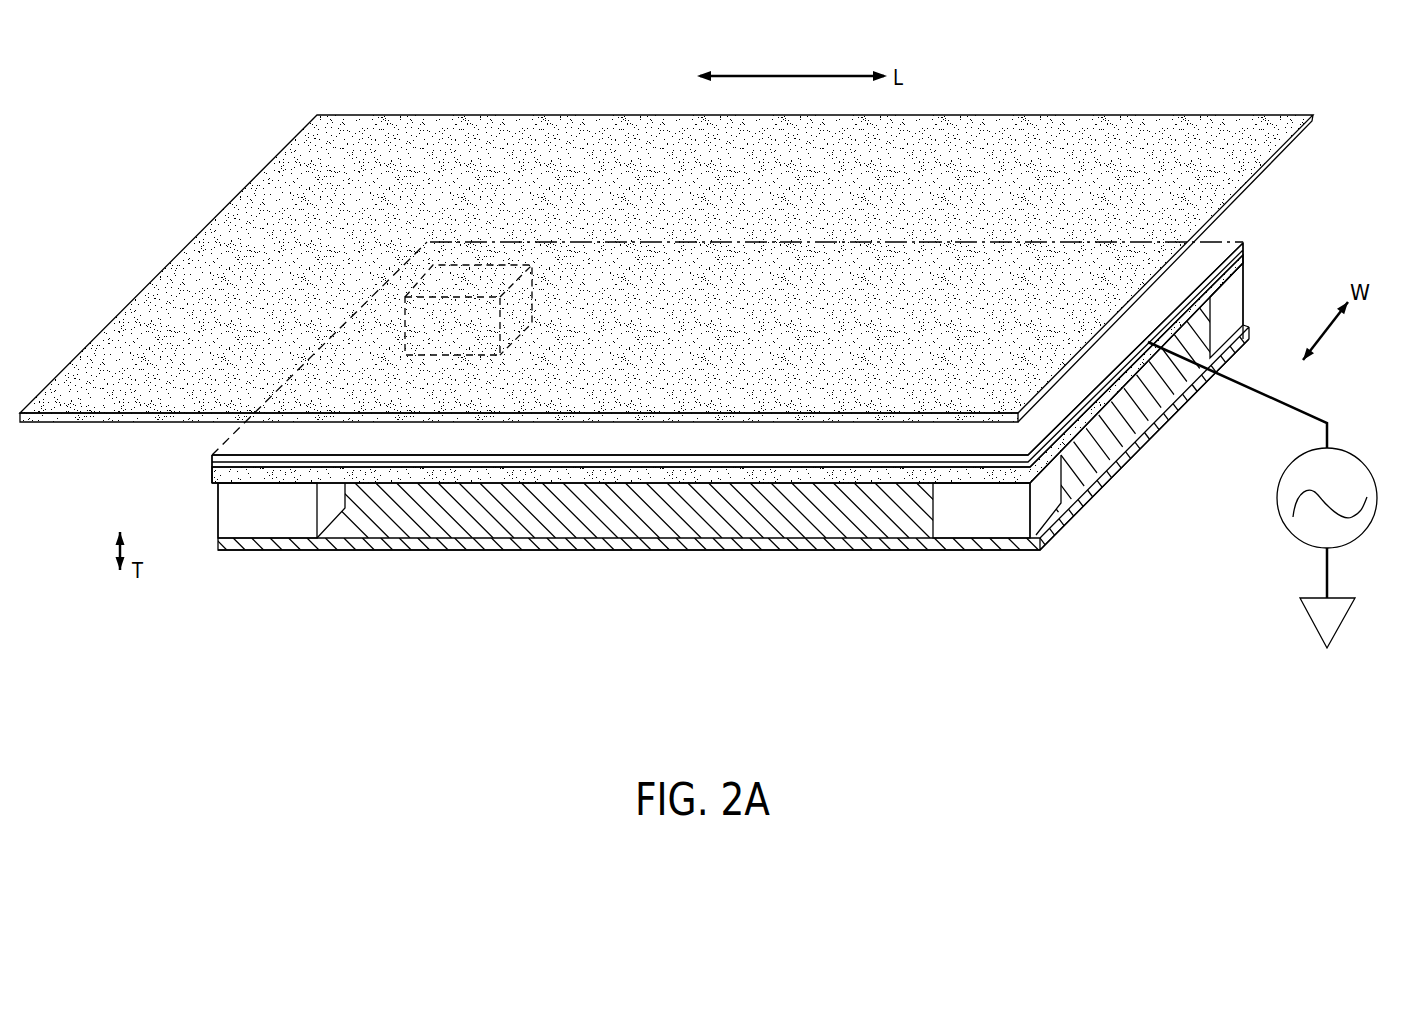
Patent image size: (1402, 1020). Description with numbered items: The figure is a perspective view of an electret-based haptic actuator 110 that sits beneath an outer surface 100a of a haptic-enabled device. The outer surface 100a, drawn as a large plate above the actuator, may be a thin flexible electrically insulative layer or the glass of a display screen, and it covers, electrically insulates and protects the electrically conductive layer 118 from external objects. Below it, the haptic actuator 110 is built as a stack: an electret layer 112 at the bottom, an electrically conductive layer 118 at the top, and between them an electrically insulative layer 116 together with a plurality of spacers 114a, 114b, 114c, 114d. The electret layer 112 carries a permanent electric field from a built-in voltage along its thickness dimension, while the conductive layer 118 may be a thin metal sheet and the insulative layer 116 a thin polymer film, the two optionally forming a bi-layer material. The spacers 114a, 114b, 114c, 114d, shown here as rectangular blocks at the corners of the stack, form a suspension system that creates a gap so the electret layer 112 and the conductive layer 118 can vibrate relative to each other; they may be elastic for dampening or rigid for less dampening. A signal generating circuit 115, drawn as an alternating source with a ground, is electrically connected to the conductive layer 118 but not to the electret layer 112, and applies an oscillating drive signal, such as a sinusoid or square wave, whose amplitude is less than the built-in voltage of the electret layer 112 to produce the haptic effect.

The outer surface 100a is at (278, 223).
The haptic actuator 110 is at (207, 453).
The electret layer 112 is at (890, 550).
The spacer 114a is at (272, 522).
The spacer 114b is at (1042, 510).
The spacer 114c is at (420, 250).
The spacer 114d is at (1245, 292).
The signal generating circuit 115 is at (1342, 450).
The electrically insulative layer 116 is at (1110, 398).
The electrically conductive layer 118 is at (1246, 243).